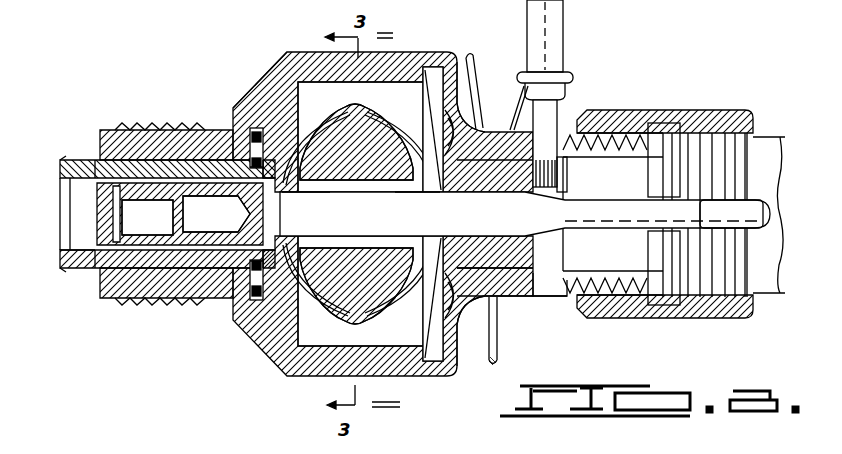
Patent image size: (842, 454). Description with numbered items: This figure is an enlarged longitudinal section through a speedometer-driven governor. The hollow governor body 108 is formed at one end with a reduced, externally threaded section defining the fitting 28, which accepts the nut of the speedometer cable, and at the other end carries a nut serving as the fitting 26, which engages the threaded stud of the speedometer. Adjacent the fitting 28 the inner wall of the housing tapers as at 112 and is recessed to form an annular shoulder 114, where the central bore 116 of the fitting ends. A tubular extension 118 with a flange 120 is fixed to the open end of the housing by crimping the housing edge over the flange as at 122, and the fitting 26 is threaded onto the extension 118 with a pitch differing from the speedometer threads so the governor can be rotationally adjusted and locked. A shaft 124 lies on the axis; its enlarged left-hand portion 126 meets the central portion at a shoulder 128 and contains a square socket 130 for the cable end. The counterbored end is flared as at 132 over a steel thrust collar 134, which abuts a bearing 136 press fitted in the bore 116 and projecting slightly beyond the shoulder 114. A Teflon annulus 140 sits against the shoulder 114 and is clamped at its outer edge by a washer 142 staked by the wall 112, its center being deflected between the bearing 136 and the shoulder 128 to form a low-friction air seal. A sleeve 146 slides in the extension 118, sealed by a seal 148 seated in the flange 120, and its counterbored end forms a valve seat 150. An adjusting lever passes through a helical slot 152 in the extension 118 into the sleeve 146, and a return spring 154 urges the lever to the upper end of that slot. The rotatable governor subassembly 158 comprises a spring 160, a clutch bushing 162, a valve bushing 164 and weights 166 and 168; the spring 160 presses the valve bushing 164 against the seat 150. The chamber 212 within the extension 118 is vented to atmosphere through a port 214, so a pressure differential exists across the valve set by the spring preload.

The fitting 26 is at (692, 112).
The fitting 28 is at (138, 128).
The governor body 108 is at (321, 364).
The tapered inner wall 112 is at (278, 127).
The annular shoulder 114 is at (258, 128).
The central bore 116 is at (105, 165).
The tubular extension 118 is at (510, 292).
The flange 120 is at (441, 362).
The crimped edge 122 is at (457, 364).
The shaft 124 is at (417, 209).
The left-hand end portion of shaft 126 is at (220, 243).
The shoulder 128 is at (306, 209).
The socket 130 is at (152, 226).
The flared lip 132 is at (75, 240).
The thrust collar 134 is at (83, 262).
The bearing 136 is at (183, 268).
The plastic annulus seal 140 is at (248, 290).
The washer 142 is at (263, 290).
The sleeve 146 is at (572, 257).
The seal 148 is at (440, 132).
The annular shoulder valve seat 150 is at (457, 269).
The helical slot 152 is at (548, 133).
The helical return spring 154 is at (499, 357).
The rotatable governor subassembly 158 is at (352, 110).
The spring 160 is at (318, 305).
The clutch bushing 162 is at (334, 228).
The valve bushing 164 is at (437, 188).
The weight 166 is at (380, 151).
The weight 168 is at (380, 294).
The chamber 212 is at (633, 162).
The port 214 is at (523, 290).